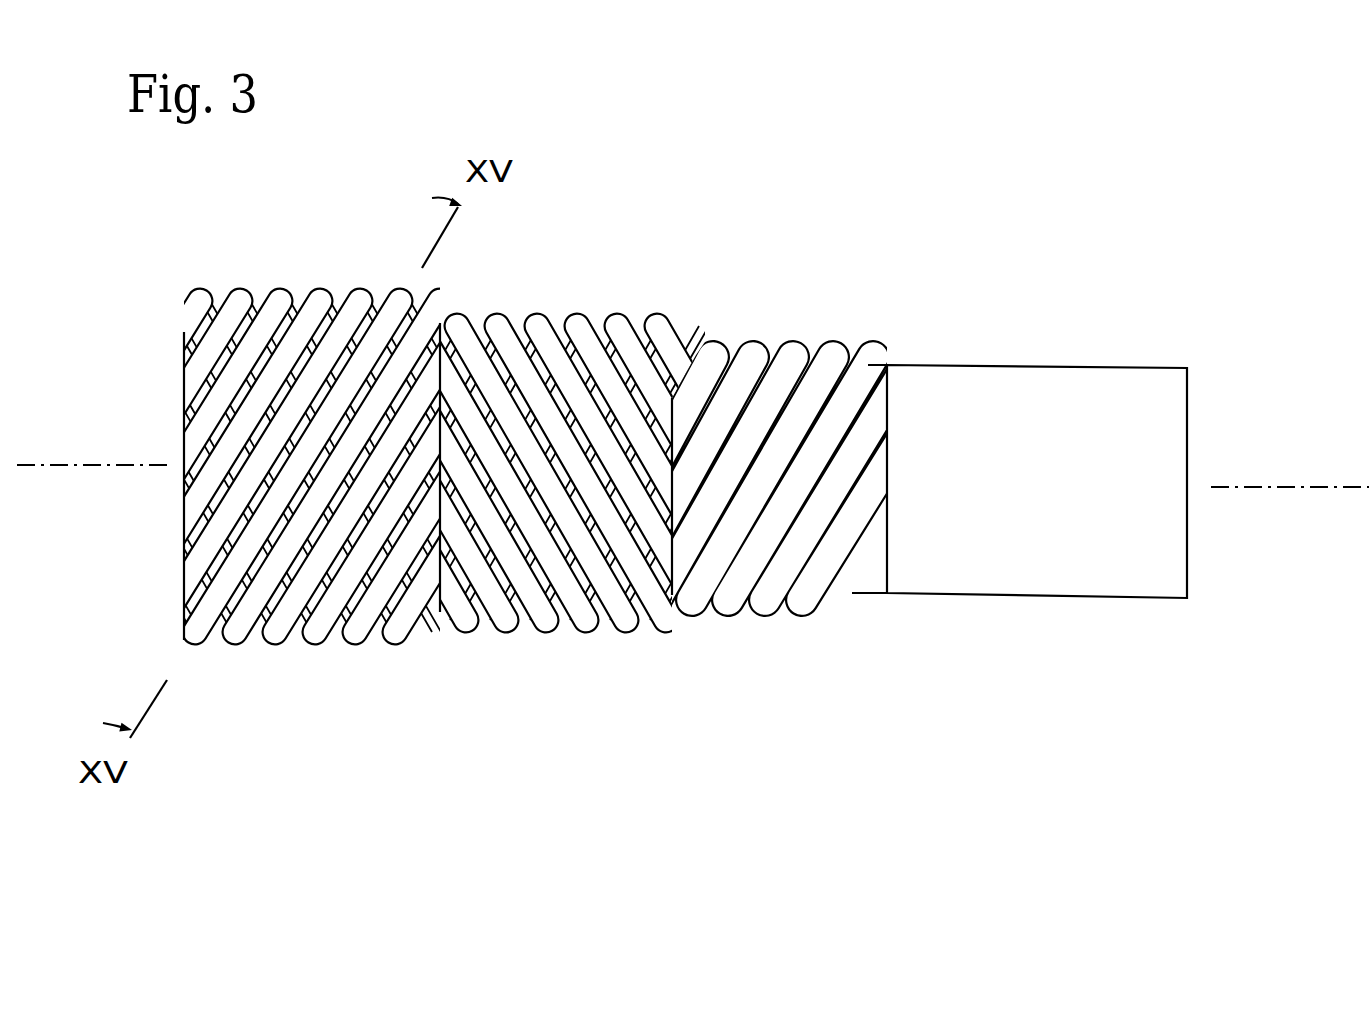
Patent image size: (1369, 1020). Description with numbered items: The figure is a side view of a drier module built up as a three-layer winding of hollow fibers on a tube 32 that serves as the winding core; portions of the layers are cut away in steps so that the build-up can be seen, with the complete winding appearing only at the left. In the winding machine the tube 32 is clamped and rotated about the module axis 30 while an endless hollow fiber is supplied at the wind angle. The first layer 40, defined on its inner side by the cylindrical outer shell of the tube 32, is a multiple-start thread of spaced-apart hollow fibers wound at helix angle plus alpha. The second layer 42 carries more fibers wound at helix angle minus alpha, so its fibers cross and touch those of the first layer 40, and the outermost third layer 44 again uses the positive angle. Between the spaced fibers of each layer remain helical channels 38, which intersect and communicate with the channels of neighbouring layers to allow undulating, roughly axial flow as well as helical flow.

The module axis 30 is at (1290, 487).
The tube 32 is at (980, 553).
The helical channels 38 is at (492, 470).
The first layer 40 is at (767, 636).
The second layer 42 is at (583, 292).
The third wound layer 44 is at (357, 262).